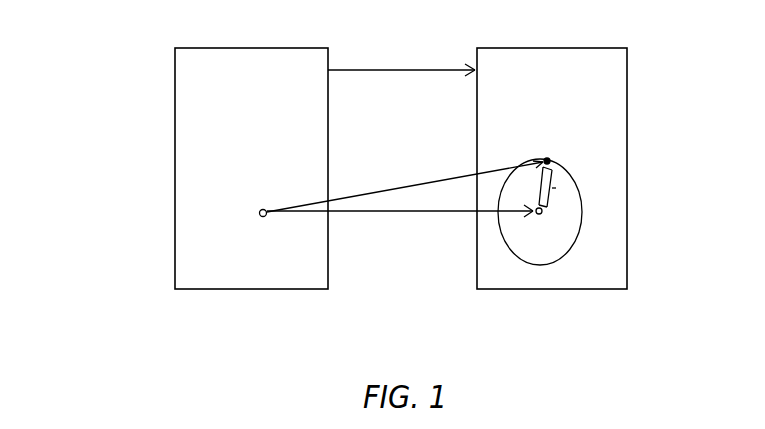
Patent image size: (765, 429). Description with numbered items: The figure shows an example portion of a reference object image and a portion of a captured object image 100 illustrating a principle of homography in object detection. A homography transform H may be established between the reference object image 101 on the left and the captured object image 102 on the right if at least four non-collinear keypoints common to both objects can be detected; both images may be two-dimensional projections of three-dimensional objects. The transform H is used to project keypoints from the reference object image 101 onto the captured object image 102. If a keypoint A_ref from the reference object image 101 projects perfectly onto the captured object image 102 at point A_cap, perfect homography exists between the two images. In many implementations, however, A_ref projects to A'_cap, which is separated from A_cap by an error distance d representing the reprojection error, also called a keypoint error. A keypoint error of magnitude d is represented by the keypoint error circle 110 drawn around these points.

The example portion of a reference object image and a portion of a captured object i 100 is at (127, 58).
The reference object image 101 is at (198, 300).
The captured object image 102 is at (492, 300).
The keypoint error circle 110 is at (583, 190).